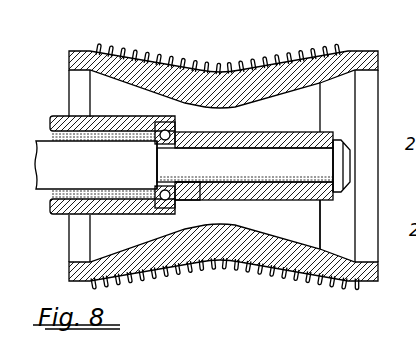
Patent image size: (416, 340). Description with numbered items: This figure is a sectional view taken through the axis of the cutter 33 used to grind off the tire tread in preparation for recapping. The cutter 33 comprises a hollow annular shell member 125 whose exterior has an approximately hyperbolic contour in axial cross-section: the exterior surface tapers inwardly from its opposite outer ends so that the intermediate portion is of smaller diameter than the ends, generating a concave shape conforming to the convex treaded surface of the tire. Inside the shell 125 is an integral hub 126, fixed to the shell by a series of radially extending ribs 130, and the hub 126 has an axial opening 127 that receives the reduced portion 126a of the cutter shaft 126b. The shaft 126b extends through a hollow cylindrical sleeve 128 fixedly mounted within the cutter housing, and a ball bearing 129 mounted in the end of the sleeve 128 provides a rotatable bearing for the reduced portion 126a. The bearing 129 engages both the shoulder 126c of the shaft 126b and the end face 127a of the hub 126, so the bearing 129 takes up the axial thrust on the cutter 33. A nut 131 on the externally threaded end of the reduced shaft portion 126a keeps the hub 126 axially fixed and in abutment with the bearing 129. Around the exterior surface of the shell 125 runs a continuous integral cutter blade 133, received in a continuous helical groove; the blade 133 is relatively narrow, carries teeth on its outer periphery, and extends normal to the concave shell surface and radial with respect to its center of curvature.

The cutter 33 is at (202, 50).
The hollow annular shell member 125 is at (368, 51).
The hub 126 is at (329, 131).
The reduced portion of the cutter shaft 126a is at (275, 166).
The cutter shaft 126b is at (112, 163).
The shoulder 126c is at (158, 160).
The axial opening 127 is at (313, 150).
The end face of the hub 127a is at (180, 195).
The hollow cylindrical sleeve 128 is at (53, 116).
The ball bearing 129 is at (166, 193).
The radially extending ribs 130 is at (298, 232).
The nut 131 is at (343, 168).
The cutter blade 133 is at (256, 70).